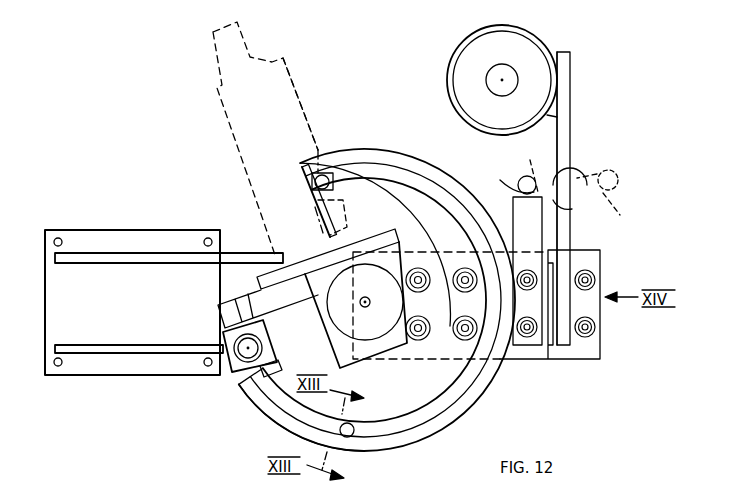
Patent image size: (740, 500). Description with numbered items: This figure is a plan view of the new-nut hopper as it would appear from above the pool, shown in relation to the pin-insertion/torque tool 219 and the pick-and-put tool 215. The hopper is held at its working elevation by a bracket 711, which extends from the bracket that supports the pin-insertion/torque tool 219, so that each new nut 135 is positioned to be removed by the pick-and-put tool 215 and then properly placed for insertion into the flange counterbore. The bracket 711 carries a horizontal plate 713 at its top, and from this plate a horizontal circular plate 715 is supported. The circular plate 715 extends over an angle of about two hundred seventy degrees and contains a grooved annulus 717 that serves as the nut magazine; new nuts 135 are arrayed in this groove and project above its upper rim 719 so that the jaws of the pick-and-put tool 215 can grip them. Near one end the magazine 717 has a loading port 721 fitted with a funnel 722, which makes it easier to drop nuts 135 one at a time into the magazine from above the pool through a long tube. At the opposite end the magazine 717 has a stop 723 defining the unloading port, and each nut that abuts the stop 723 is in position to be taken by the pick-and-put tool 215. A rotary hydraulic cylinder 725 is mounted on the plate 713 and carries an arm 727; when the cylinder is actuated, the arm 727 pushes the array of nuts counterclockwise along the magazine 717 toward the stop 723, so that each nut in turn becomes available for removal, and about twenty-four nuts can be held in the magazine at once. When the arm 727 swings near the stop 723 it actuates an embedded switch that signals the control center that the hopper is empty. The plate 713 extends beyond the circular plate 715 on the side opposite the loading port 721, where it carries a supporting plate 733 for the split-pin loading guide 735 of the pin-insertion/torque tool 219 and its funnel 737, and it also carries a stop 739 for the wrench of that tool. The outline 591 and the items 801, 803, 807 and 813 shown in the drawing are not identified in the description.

The bracket 711 is at (124, 226).
The pick-and-put tool 215 is at (230, 118).
The arm edge 591 is at (283, 106).
The arm 727 is at (257, 297).
The rotary hydraulic cylinder 725 is at (385, 285).
The horizontal plate 713 is at (422, 352).
The stop 739 is at (535, 345).
The pin-insertion/torque tool 219 is at (612, 100).
The split-pin loading guide 735 is at (595, 41).
The funnel 737 is at (448, 68).
The roller 813 is at (518, 184).
The link (phantom) 803 is at (517, 171).
The supporting plate 733 is at (572, 233).
The pin (phantom) 801 is at (612, 168).
The link (phantom) 807 is at (630, 209).
The horizontal circular plate 715 is at (468, 466).
The upper rim 719 is at (428, 164).
The grooved annulus 717 is at (280, 398).
The stop 723 is at (305, 160).
The new nut 135 is at (330, 178).
The loading port 721 is at (262, 375).
The funnel 722 is at (233, 372).